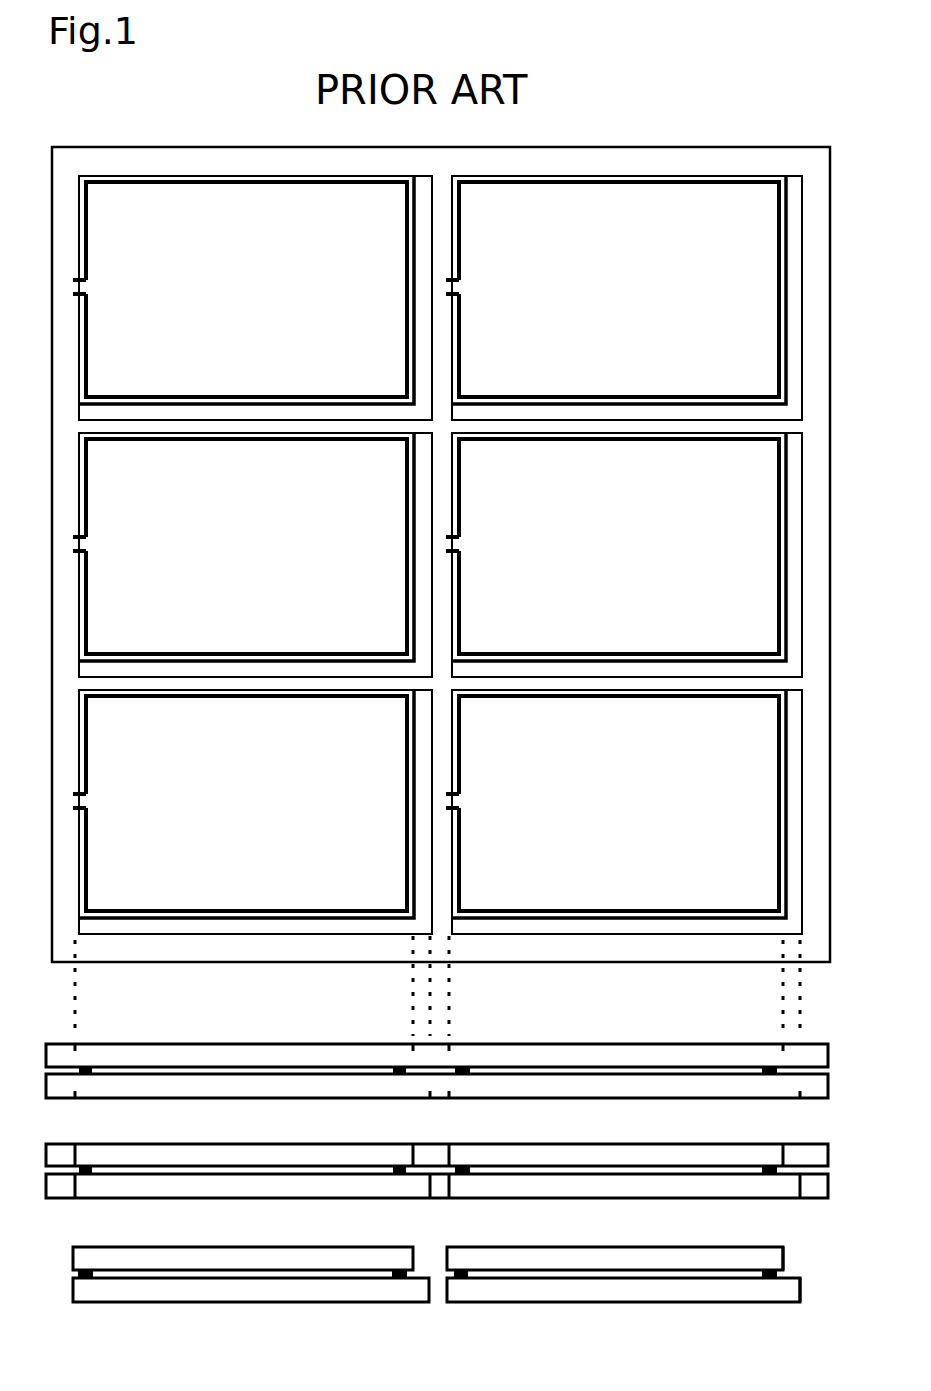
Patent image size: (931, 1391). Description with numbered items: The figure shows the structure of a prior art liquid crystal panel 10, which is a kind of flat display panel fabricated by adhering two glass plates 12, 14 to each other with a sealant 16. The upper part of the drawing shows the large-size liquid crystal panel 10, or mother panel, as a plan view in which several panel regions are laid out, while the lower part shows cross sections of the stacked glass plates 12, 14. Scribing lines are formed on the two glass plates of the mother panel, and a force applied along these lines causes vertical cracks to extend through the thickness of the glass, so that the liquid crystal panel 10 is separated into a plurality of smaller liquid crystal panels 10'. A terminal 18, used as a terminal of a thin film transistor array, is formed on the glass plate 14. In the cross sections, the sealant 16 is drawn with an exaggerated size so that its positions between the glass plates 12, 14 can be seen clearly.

The liquid crystal panel 10 is at (441, 581).
The glass plate 12 is at (622, 1046).
The glass plate 14 is at (652, 1100).
The sealant 16 is at (87, 247).
The terminal 18 is at (793, 1272).
The liquid crystal panel 10' is at (436, 1301).